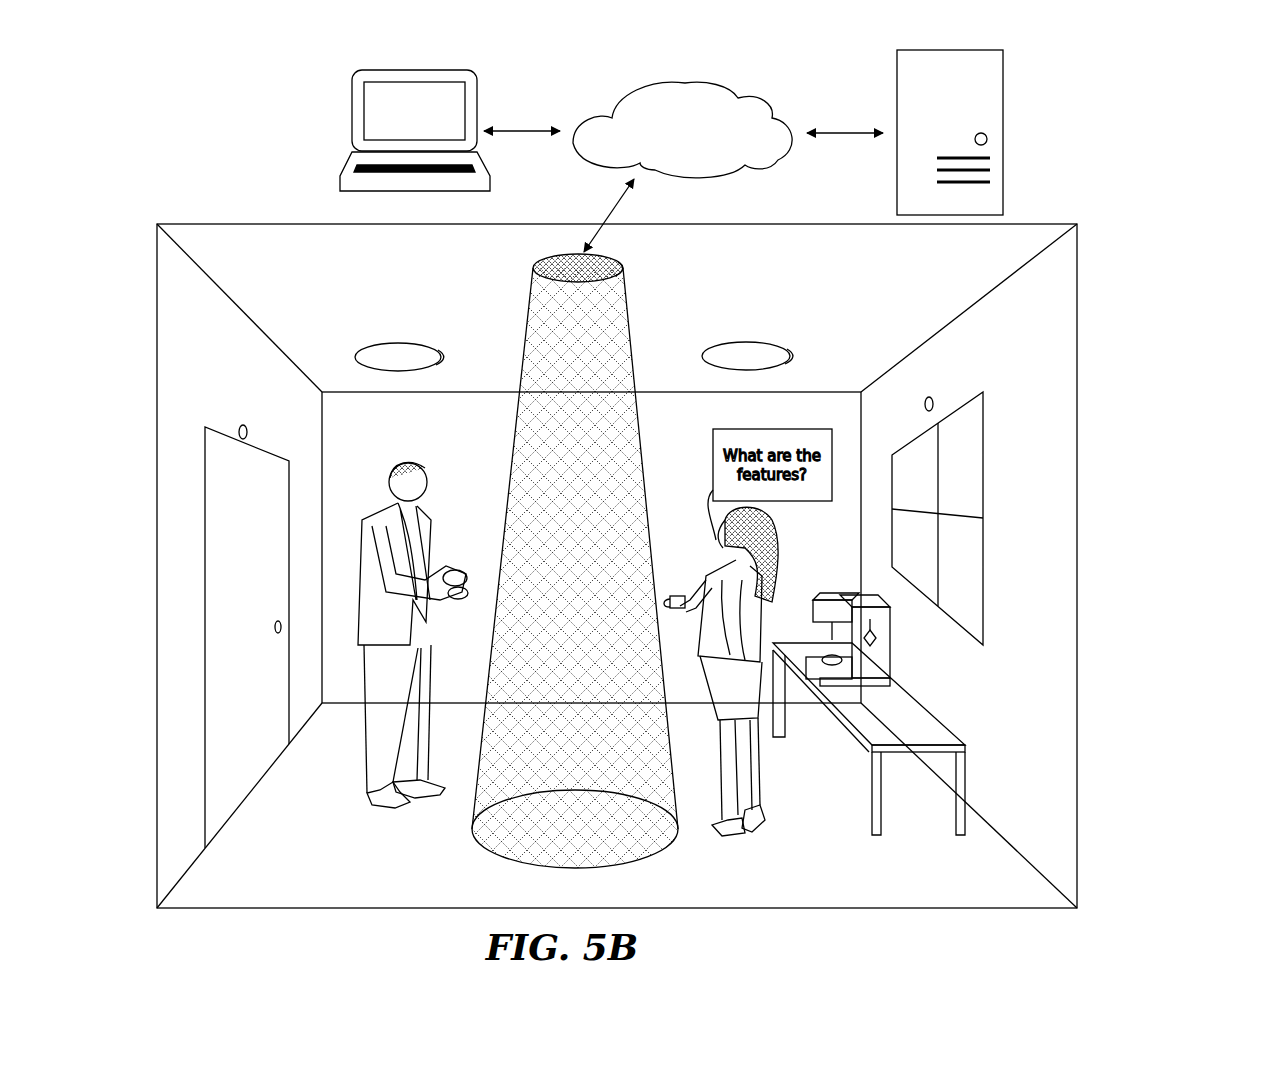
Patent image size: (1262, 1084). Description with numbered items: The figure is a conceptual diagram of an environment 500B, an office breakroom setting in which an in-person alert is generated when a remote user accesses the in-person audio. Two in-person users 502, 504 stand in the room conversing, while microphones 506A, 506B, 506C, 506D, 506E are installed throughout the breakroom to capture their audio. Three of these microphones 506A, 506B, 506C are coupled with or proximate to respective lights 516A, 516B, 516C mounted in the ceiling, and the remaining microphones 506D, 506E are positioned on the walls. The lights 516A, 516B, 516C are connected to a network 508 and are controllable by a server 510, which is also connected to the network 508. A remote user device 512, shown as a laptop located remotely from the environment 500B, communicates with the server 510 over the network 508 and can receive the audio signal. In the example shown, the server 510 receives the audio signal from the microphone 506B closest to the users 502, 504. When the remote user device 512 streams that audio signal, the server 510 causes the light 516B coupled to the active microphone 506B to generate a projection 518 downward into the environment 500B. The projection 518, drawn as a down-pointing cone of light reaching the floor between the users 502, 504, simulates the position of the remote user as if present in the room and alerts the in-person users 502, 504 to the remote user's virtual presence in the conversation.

The environment 500B is at (1108, 140).
The in-person user 502 is at (406, 458).
The in-person user 504 is at (770, 560).
The microphone 506A is at (441, 357).
The microphone 506B is at (618, 268).
The microphone 506C is at (790, 357).
The microphone 506D is at (244, 425).
The microphone 506E is at (930, 397).
The network 508 is at (682, 130).
The server 510 is at (950, 132).
The remote user device 512 is at (415, 130).
The light 516A is at (386, 345).
The light 516B is at (535, 258).
The light 516C is at (733, 342).
The projection 518 is at (636, 455).